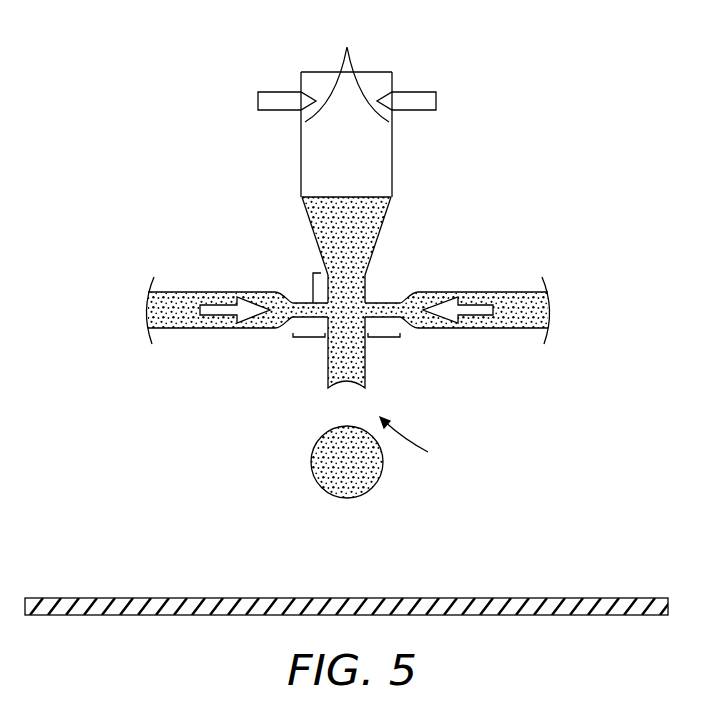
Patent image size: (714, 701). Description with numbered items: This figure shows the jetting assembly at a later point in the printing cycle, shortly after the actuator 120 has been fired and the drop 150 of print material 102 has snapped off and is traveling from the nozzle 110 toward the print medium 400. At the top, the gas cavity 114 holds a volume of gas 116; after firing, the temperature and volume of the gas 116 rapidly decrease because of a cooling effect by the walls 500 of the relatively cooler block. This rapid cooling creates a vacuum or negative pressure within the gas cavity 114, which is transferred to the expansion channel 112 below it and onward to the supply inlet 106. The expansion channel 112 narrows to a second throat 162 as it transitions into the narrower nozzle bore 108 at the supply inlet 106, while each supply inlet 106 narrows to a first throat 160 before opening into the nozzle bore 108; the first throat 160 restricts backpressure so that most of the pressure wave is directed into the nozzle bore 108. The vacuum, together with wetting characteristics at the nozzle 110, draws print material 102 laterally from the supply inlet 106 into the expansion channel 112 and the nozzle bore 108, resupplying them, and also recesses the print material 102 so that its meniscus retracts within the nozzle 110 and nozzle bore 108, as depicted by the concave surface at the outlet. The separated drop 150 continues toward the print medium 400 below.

The walls 500 is at (347, 50).
The actuator 120 is at (279, 92).
The gas 116 is at (301, 150).
The gas cavity 114 is at (392, 150).
The expansion channel 112 is at (381, 230).
The print material 102 is at (362, 252).
The nozzle bore 108 is at (367, 365).
The supply inlet 106 is at (191, 292).
The second throat 162 is at (311, 289).
The first throat 160 is at (312, 340).
The nozzle 110 is at (419, 442).
The drop 150 is at (367, 488).
The print medium 400 is at (145, 598).